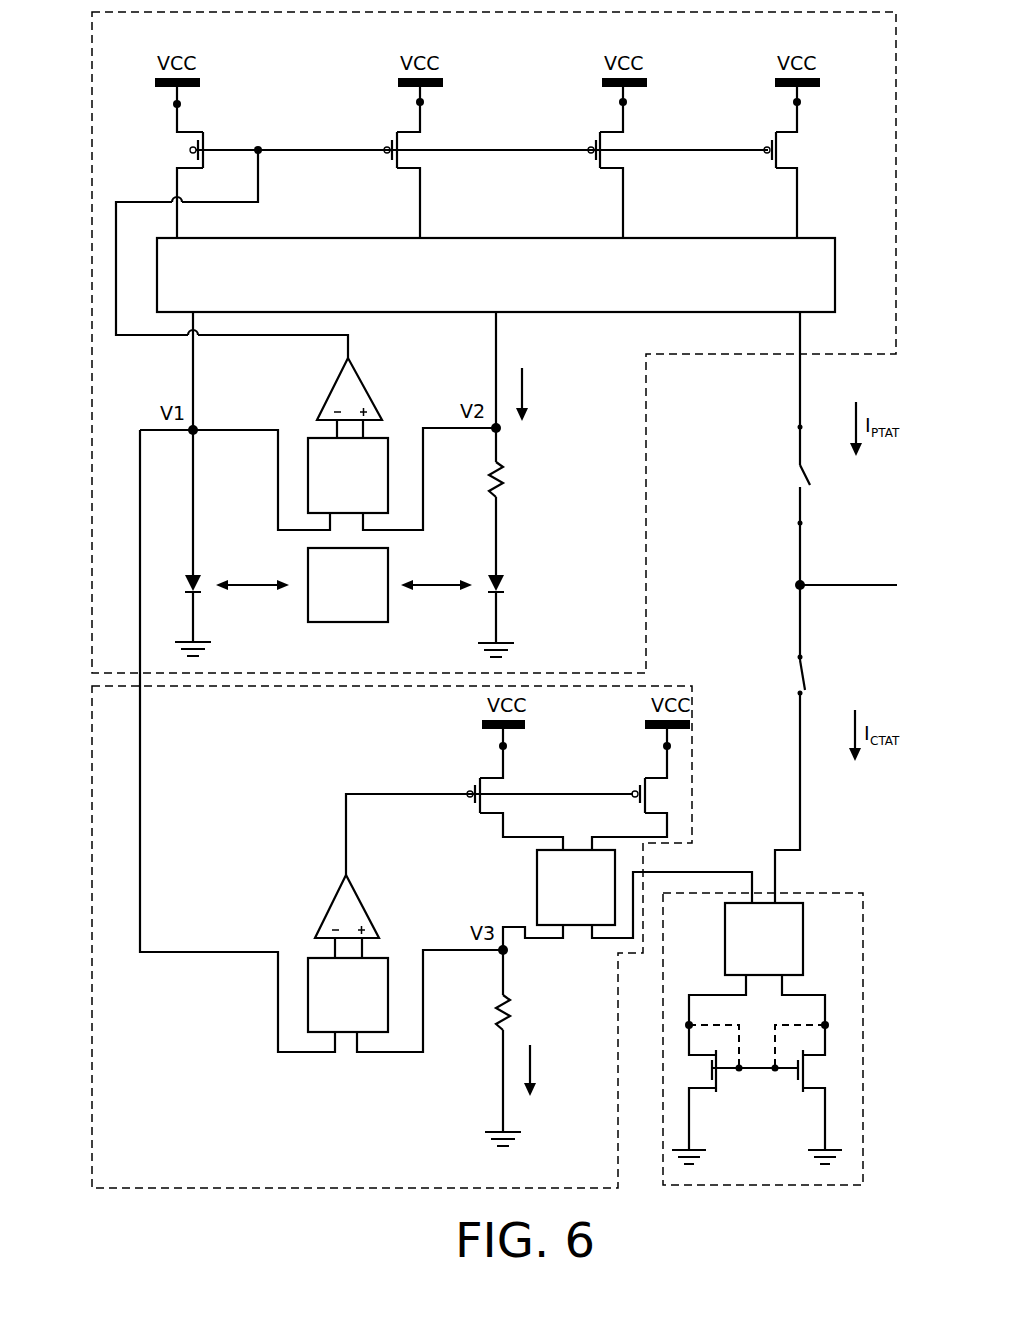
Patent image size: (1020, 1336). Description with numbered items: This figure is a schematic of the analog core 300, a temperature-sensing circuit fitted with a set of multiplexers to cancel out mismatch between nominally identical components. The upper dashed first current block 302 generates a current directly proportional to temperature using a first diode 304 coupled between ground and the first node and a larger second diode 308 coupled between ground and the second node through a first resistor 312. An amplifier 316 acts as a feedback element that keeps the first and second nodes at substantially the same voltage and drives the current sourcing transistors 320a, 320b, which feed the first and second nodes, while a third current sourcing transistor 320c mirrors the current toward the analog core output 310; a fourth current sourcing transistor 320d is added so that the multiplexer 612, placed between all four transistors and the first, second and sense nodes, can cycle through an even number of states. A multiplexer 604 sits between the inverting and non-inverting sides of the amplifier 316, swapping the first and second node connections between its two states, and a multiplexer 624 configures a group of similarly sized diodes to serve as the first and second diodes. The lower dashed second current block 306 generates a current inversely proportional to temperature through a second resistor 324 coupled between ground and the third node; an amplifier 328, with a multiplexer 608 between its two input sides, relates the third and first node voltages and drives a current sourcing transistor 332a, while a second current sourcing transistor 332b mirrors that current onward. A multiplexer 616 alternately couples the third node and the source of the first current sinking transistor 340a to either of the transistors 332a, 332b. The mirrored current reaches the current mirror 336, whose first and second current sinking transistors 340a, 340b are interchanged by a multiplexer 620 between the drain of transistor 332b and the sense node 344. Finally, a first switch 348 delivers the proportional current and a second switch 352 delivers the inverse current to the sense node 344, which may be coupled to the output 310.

The analog core 300 is at (480, 110).
The first current block 302 is at (90, 343).
The diode D1 304 is at (193, 578).
The second current block 306 is at (90, 937).
The diode D2 308 is at (500, 585).
The analog core output 310 is at (850, 585).
The resistor R1 312 is at (496, 460).
The amplifier 316 is at (372, 390).
The first current sourcing transistor 320a is at (205, 130).
The second current sourcing transistor 320b is at (392, 134).
The third current sourcing transistor 320c is at (596, 134).
The fourth current sourcing transistor 320d is at (772, 134).
The resistor R2 324 is at (500, 998).
The amplifier 328 is at (338, 905).
The current sourcing transistor 332a is at (470, 778).
The second current sourcing transistor 332b is at (638, 778).
The current mirror 336 is at (787, 893).
The first current sinking transistor 340a is at (711, 1090).
The second current sinking transistor 340b is at (799, 1150).
The VSENSE node 344 is at (800, 585).
The first switch 348 is at (800, 427).
The second switch 352 is at (800, 657).
The multiplexer 604 is at (308, 470).
The multiplexer 608 is at (388, 992).
The multiplexer 612 is at (820, 238).
The multiplexer 616 is at (537, 878).
The multiplexer 620 is at (725, 913).
The multiplexer 624 is at (348, 622).